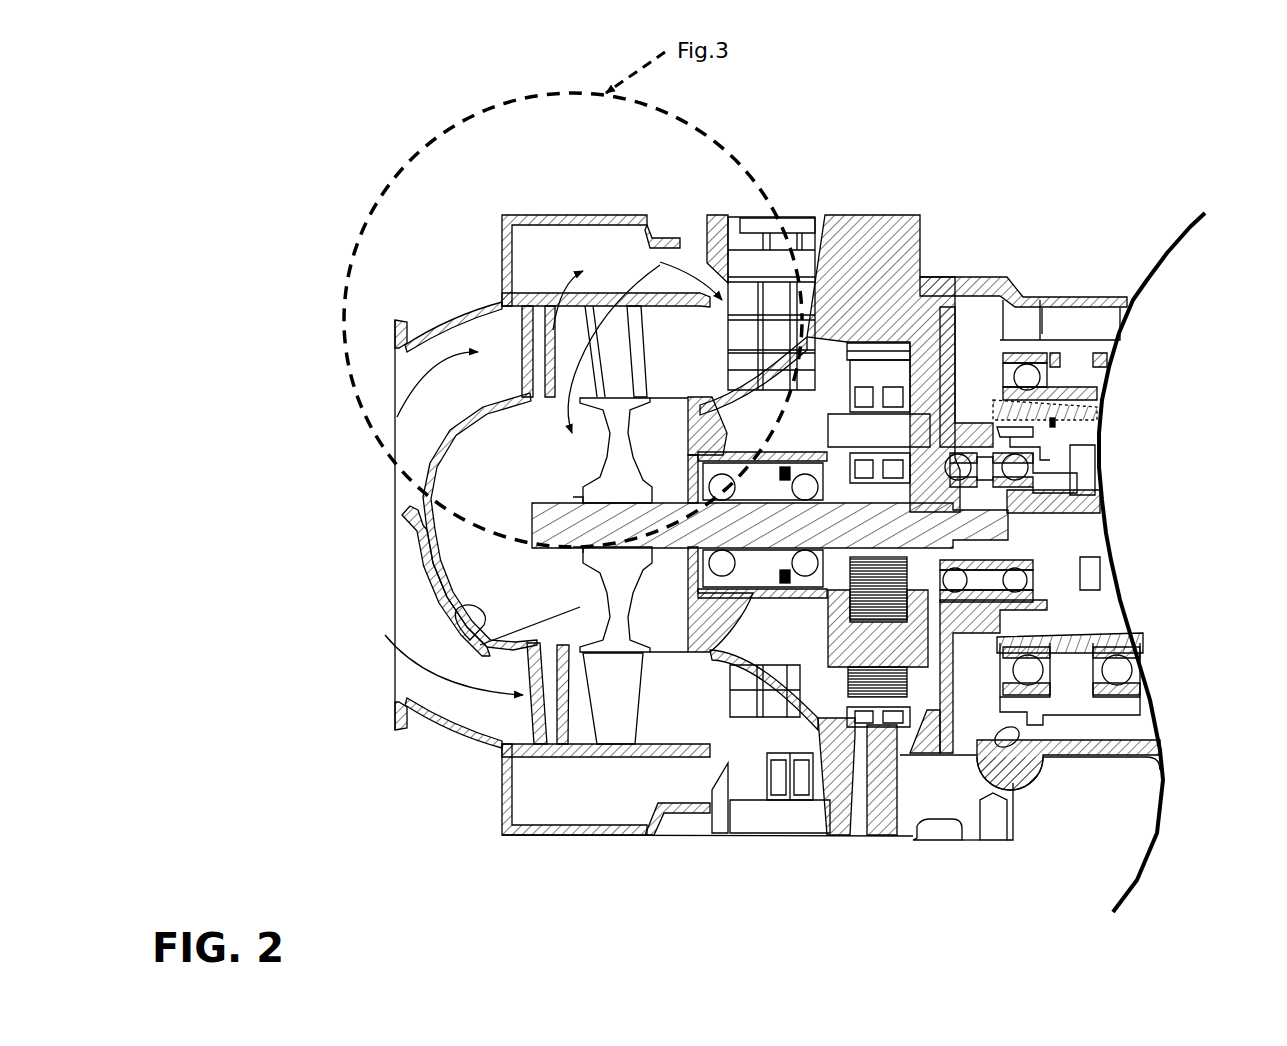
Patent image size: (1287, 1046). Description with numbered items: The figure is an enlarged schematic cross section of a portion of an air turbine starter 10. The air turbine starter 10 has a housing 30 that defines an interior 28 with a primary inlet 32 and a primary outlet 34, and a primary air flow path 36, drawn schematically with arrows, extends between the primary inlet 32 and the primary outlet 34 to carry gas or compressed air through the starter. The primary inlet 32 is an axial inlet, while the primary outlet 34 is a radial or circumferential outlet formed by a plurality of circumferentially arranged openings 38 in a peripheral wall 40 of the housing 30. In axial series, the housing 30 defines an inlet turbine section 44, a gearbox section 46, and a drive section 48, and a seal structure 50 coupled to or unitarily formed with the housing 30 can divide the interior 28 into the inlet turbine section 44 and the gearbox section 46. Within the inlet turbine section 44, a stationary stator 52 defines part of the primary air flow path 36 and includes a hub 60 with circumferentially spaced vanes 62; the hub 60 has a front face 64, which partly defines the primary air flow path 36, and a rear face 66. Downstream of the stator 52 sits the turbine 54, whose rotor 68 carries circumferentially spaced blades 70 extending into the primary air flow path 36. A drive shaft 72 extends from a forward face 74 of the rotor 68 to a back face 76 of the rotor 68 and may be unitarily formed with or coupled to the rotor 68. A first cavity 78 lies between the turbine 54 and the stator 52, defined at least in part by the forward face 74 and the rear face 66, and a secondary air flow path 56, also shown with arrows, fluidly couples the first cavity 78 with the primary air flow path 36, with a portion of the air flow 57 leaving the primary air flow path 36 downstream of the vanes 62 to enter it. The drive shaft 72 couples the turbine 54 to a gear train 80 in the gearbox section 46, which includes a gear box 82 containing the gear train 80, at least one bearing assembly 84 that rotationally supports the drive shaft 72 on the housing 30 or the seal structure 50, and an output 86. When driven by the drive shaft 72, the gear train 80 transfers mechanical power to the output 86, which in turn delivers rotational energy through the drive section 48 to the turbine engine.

The air turbine starter 10 is at (1218, 123).
The interior 28 is at (423, 412).
The housing 30 is at (600, 208).
The primary inlet 32 is at (370, 457).
The primary outlet 34 is at (790, 207).
The primary air flow path 36 is at (513, 352).
The openings 38 is at (760, 835).
The peripheral wall 40 is at (868, 830).
The inlet turbine section 44 is at (398, 843).
The gearbox section 46 is at (888, 859).
The drive section 48 is at (1068, 815).
The seal structure 50 is at (745, 600).
The stator 52 is at (411, 569).
The turbine 54 is at (581, 718).
The secondary air flow path 56 is at (563, 280).
The air flow 57 is at (603, 368).
The hub 60 is at (408, 497).
The vanes 62 is at (525, 321).
The front face 64 is at (478, 602).
The rear face 66 is at (468, 620).
The rotor 68 is at (583, 575).
The blades 70 is at (673, 560).
The drive shaft 72 is at (788, 489).
The forward face 74 is at (533, 645).
The back face 76 is at (600, 590).
The first cavity 78 is at (463, 507).
The gear train 80 is at (883, 683).
The gear box 82 is at (929, 345).
The bearing assembly 84 is at (748, 763).
The output 86 is at (1073, 500).